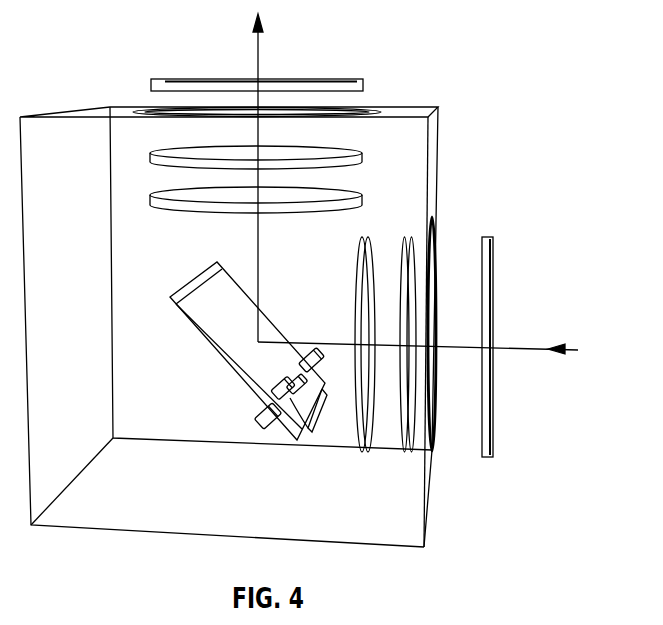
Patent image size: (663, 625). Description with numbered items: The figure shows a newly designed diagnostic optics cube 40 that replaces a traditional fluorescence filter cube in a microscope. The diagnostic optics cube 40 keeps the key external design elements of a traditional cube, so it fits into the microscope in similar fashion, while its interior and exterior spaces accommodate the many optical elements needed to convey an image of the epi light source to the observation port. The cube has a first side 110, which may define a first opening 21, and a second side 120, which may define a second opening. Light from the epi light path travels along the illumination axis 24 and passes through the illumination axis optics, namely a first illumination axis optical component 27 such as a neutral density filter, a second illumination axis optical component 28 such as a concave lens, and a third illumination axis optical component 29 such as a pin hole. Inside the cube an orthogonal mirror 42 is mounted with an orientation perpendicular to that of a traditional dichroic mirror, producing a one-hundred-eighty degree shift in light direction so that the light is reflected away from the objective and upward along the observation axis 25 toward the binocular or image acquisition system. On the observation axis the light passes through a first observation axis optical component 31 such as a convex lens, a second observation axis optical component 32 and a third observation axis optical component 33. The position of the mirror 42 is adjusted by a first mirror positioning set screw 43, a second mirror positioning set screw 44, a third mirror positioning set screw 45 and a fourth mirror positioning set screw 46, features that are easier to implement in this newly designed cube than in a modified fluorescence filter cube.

The diagnostic optics cube 40 is at (515, 76).
The first side of a cube 110 is at (435, 147).
The second side of cube 120 is at (72, 116).
The first opening in a fluorescence filter cube 21 is at (436, 455).
The illumination axis 24 is at (588, 333).
The observation axis 25 is at (263, 52).
The first illumination axis optical component 27 is at (492, 457).
The second illumination axis optical component 28 is at (403, 455).
The third illumination axis optical component 29 is at (358, 455).
The first observation axis optical component 31 is at (199, 78).
The second observation axis optical component 32 is at (152, 160).
The third observation axis optical component 33 is at (152, 198).
The orthogonal mirror 42 is at (212, 342).
The first mirror positioning set screw 43 is at (272, 393).
The second mirror positioning set screw 44 is at (270, 430).
The third mirror positioning set screw 45 is at (304, 424).
The fourth mirror positioning set screw 46 is at (318, 350).